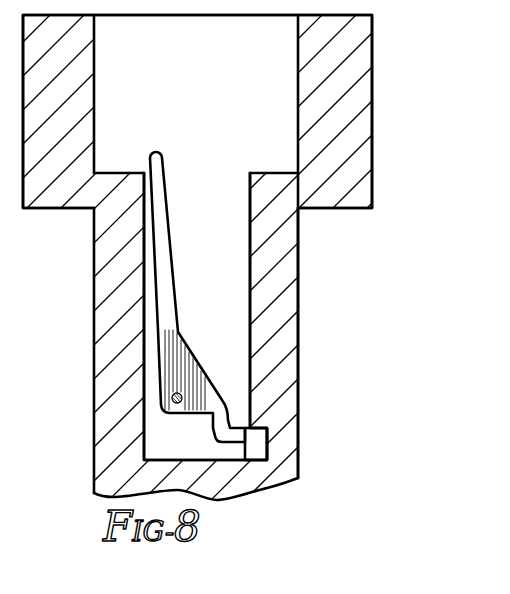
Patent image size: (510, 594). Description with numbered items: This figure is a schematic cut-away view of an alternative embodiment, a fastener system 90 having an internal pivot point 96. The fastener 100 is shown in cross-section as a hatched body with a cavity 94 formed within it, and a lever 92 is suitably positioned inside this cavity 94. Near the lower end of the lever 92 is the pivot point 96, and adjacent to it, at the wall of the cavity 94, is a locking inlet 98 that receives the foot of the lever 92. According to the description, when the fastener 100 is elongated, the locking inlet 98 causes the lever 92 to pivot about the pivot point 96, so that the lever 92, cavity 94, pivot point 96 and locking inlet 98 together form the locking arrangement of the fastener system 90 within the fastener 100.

The fastener system 90 is at (330, 361).
The lever 92 is at (163, 297).
The cavity 94 is at (232, 347).
The pivot point 96 is at (178, 414).
The locking inlet 98 is at (241, 414).
The fastener 100 is at (273, 472).